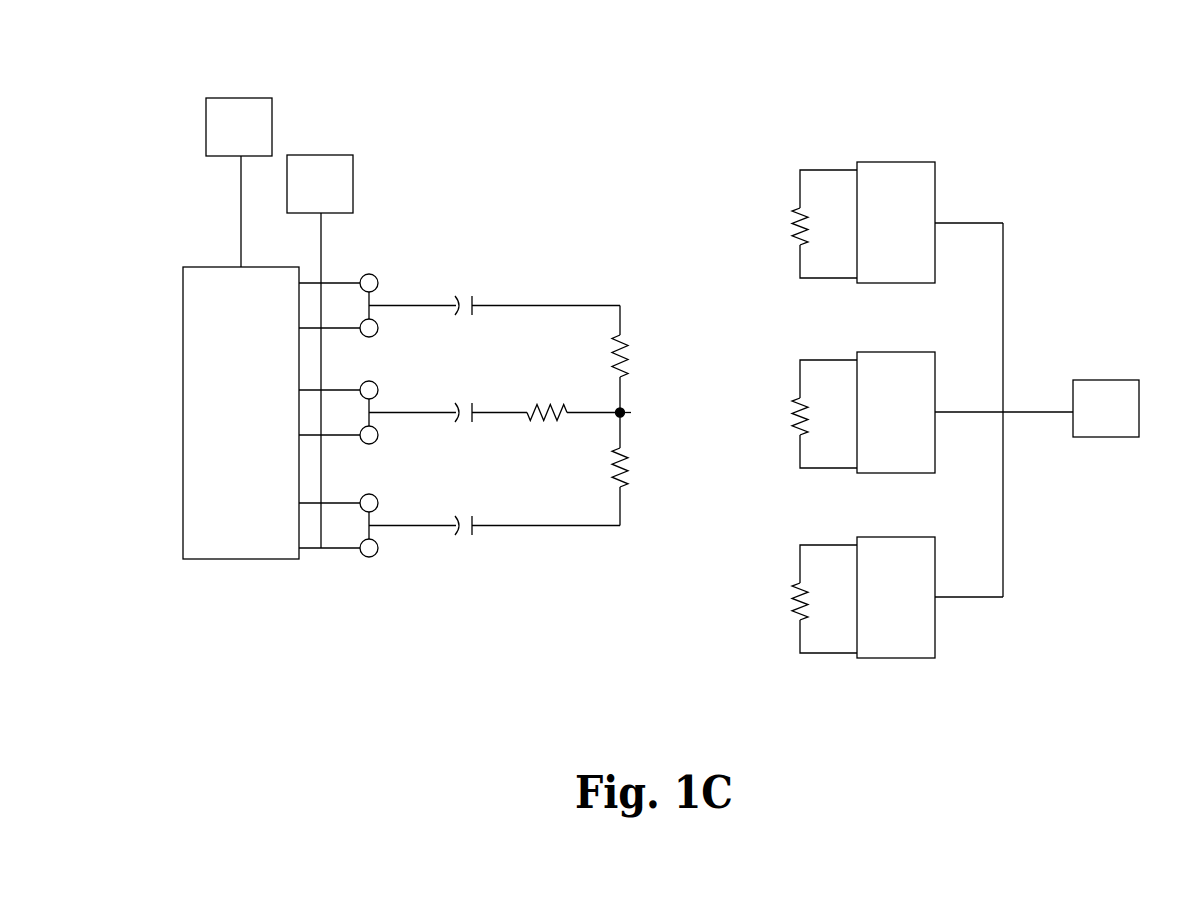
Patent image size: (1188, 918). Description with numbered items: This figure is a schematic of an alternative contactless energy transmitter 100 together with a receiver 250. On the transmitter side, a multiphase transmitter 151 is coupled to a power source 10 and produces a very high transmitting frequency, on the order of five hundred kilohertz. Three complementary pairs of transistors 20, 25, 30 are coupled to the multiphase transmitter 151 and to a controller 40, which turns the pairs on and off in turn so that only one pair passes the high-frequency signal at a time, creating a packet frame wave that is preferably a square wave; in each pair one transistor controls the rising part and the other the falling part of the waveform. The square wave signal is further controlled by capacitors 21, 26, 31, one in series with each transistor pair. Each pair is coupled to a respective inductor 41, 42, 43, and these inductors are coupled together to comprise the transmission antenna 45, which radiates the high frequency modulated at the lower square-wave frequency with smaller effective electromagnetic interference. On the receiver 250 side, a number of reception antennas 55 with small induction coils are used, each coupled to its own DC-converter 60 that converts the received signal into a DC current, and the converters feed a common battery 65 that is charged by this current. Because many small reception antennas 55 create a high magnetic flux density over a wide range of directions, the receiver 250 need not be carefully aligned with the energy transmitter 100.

The contactless energy transmitter 100 is at (542, 128).
The receiver 250 is at (1048, 123).
The power source 10 is at (239, 182).
The controller 40 is at (320, 351).
The multiphase transmitter 151 is at (271, 413).
The complementary pair of transistors 20 is at (393, 323).
The capacitor 21 is at (485, 292).
The complementary pair of transistors 25 is at (393, 430).
The capacitor 26 is at (485, 397).
The inductor 42 is at (543, 400).
The complementary pair of transistors 30 is at (393, 543).
The capacitor 31 is at (485, 507).
The inductor 41 is at (637, 340).
The antenna 45 is at (637, 400).
The inductor 43 is at (637, 468).
The reception antenna 55 is at (792, 163).
The DC-converter 60 is at (930, 410).
The battery 65 is at (1071, 408).